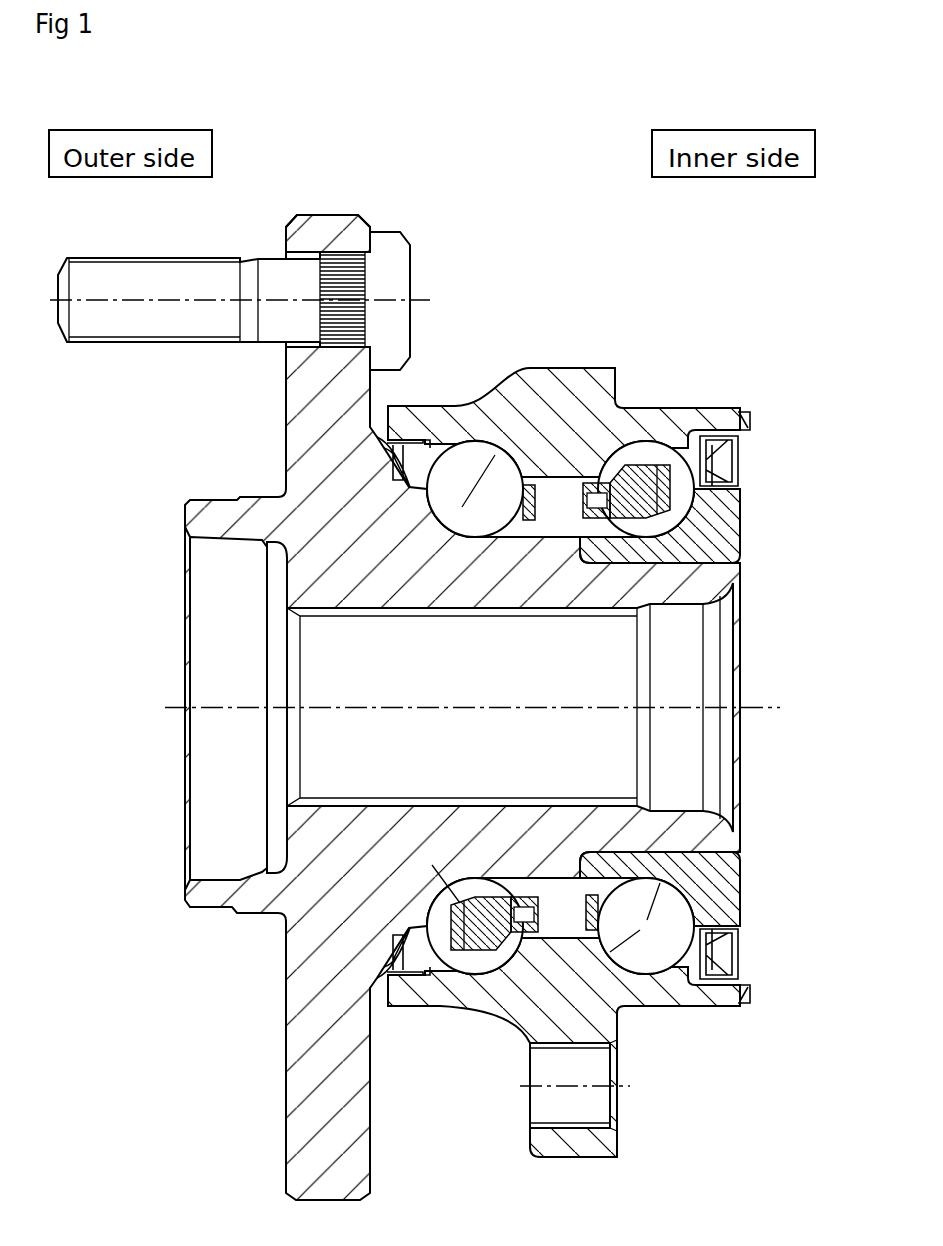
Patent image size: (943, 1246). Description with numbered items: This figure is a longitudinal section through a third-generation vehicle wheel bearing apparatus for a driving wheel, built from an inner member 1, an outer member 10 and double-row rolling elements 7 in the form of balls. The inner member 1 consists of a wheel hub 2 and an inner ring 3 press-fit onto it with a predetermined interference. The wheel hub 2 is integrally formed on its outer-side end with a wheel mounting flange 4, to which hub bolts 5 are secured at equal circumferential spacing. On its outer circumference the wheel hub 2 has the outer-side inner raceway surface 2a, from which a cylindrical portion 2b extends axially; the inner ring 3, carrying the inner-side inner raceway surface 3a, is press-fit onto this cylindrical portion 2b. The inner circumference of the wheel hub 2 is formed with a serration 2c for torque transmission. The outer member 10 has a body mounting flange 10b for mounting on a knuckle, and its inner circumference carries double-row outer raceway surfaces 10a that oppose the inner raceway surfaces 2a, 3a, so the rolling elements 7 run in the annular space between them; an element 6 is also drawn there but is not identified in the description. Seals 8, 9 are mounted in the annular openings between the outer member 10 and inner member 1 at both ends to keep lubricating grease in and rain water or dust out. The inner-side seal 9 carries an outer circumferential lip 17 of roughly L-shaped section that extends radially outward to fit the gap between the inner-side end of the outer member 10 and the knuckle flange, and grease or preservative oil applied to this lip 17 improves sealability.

The inner member 1 is at (287, 585).
The wheel hub 2 is at (325, 498).
The inner raceway surface 2a is at (462, 522).
The cylindrical portion 2b is at (688, 530).
The serration 2c is at (347, 620).
The inner ring 3 is at (724, 525).
The inner raceway surface 3a is at (643, 505).
The wheel mounting flange 4 is at (330, 222).
The hub bolts 5 is at (150, 270).
The cage 6 is at (590, 895).
The rolling elements 7 is at (612, 950).
The seal 8 is at (375, 462).
The seal 9 is at (742, 463).
The outer member 10 is at (572, 375).
The outer raceway surfaces 10a is at (470, 452).
The body mounting flange 10b is at (583, 1145).
The outer circumferential lip 17 is at (752, 420).